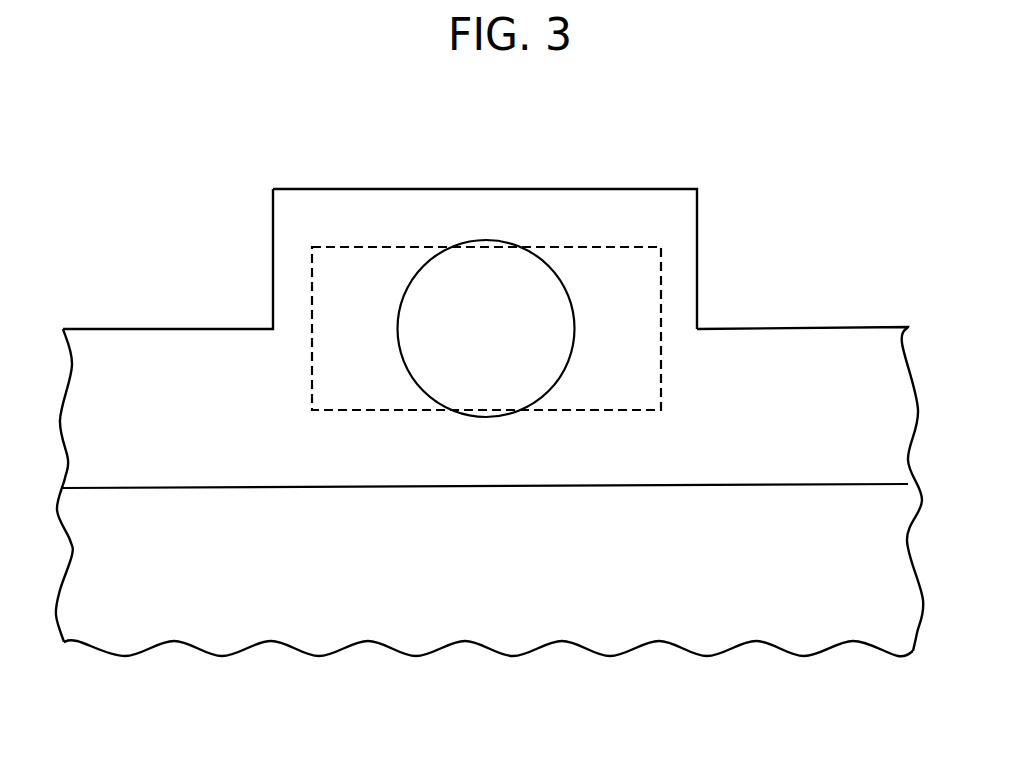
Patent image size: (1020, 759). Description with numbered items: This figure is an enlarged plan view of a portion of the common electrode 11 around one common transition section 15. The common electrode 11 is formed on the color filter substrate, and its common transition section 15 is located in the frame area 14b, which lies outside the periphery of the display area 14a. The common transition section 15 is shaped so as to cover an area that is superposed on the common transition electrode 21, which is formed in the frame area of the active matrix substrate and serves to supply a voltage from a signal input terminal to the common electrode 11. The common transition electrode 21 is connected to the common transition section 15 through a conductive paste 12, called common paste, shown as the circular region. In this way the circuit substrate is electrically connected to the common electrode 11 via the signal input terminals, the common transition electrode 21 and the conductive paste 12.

The common electrode 11 is at (812, 328).
The conductive paste 12 is at (486, 240).
The display area 14a is at (562, 595).
The frame area 14b is at (189, 347).
The common transition section 15 is at (408, 189).
The common transition electrode 21 is at (661, 273).